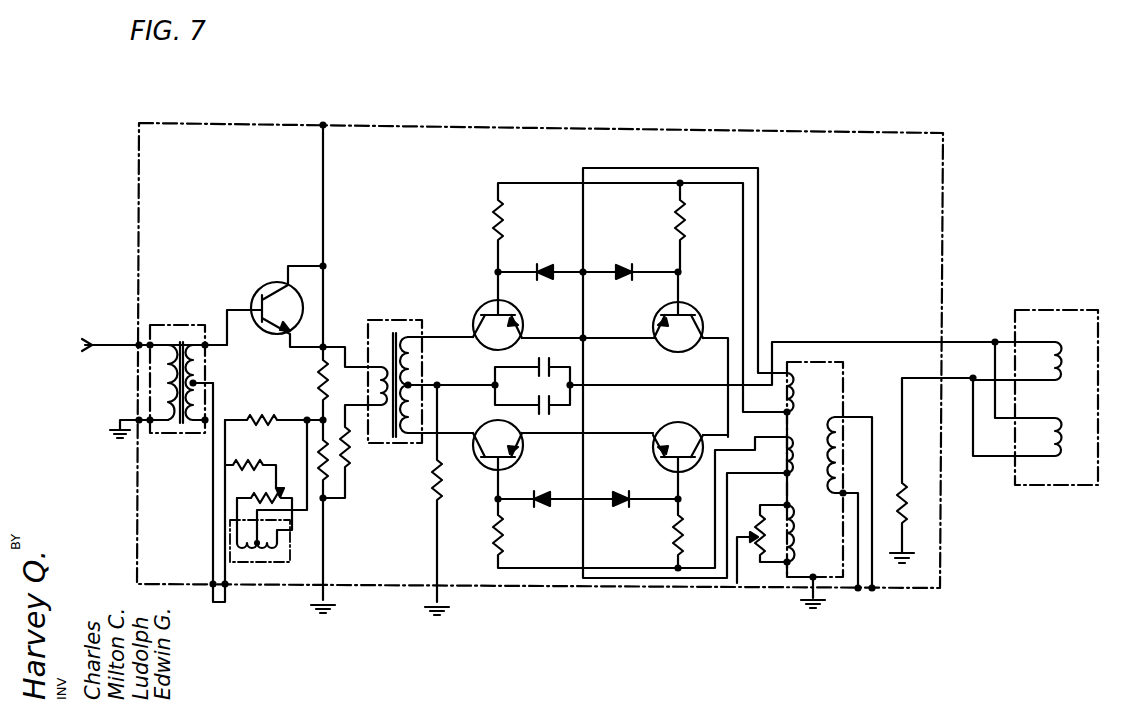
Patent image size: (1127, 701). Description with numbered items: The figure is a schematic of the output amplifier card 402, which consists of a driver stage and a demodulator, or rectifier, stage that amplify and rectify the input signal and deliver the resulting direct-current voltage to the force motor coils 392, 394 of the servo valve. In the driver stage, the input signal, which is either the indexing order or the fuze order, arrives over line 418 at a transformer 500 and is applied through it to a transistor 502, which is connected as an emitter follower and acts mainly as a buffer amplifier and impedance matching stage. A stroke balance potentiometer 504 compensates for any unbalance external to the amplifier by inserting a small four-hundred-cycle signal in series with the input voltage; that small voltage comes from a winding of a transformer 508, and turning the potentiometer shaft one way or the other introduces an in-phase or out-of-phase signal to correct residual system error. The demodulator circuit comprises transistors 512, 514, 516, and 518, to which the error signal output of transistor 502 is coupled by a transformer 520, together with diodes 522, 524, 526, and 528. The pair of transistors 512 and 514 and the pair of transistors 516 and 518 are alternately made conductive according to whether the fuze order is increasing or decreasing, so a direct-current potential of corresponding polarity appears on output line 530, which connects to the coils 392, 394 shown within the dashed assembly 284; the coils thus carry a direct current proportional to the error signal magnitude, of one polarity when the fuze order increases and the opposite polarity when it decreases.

The output amplifier card 402 is at (140, 135).
The line 418 is at (110, 345).
The transformer 500 is at (157, 325).
The transistor 502 is at (260, 290).
The stroke balance potentiometer 504 is at (282, 494).
The transformer 508 is at (846, 384).
The transistor 512 is at (473, 312).
The transistor 514 is at (718, 298).
The transistor 516 is at (471, 432).
The transistor 518 is at (656, 431).
The transformer 520 is at (429, 319).
The diode 522 is at (560, 256).
The diode 524 is at (636, 256).
The diode 526 is at (558, 486).
The diode 528 is at (636, 486).
The output line 530 is at (880, 342).
The motor winding assembly 284 is at (1035, 379).
The force motor coil 392 is at (1027, 351).
The force motor coil 394 is at (1076, 424).